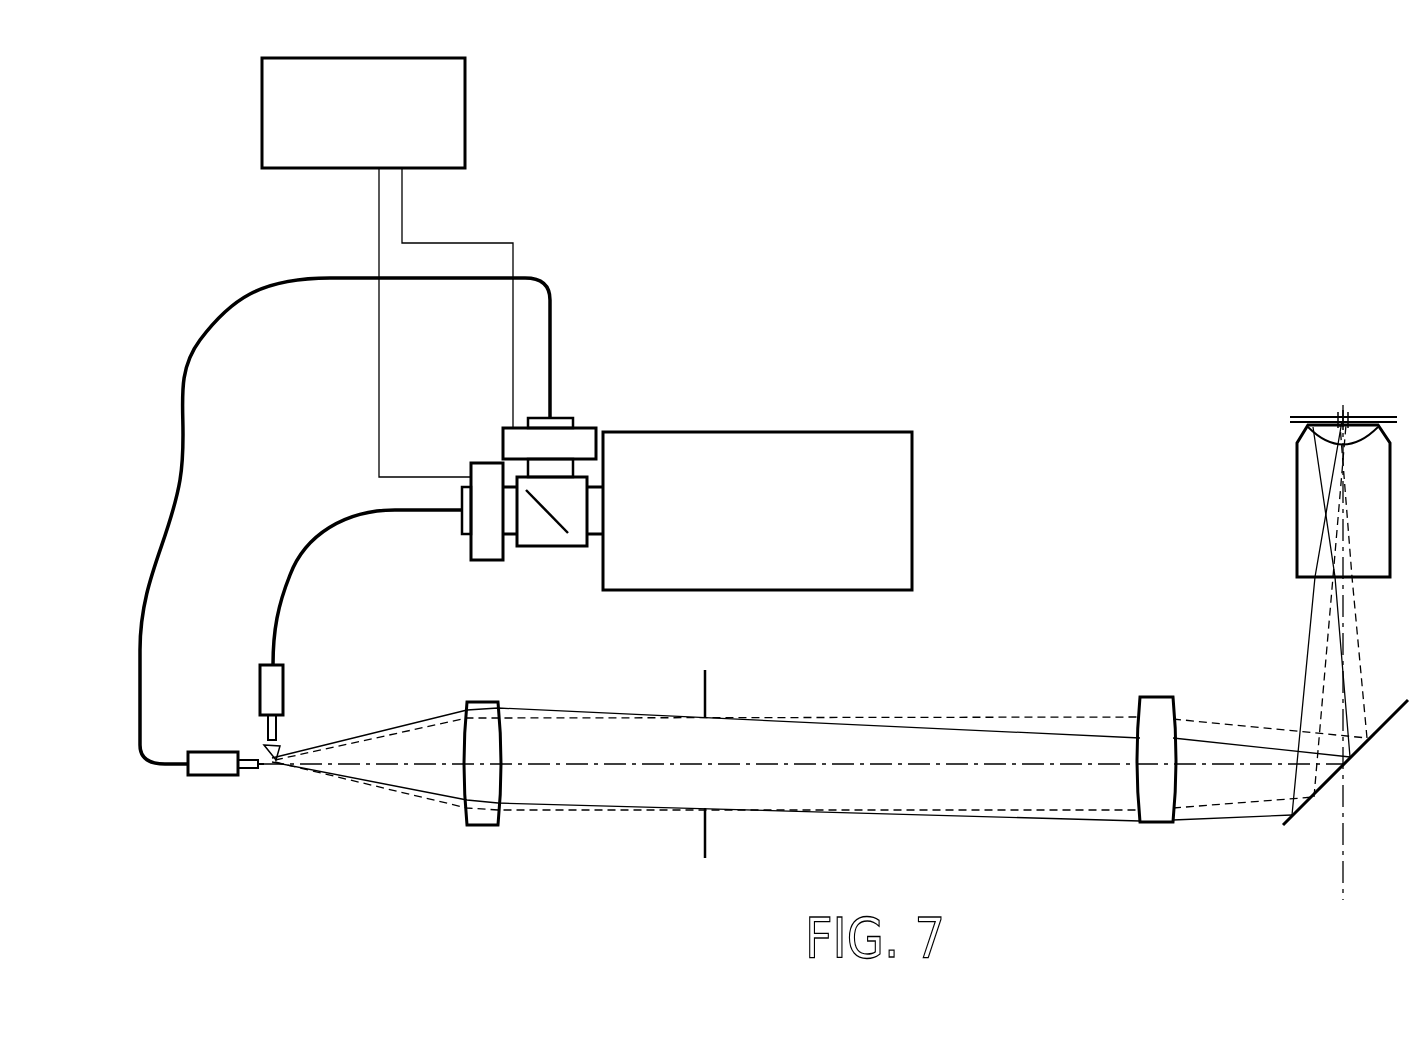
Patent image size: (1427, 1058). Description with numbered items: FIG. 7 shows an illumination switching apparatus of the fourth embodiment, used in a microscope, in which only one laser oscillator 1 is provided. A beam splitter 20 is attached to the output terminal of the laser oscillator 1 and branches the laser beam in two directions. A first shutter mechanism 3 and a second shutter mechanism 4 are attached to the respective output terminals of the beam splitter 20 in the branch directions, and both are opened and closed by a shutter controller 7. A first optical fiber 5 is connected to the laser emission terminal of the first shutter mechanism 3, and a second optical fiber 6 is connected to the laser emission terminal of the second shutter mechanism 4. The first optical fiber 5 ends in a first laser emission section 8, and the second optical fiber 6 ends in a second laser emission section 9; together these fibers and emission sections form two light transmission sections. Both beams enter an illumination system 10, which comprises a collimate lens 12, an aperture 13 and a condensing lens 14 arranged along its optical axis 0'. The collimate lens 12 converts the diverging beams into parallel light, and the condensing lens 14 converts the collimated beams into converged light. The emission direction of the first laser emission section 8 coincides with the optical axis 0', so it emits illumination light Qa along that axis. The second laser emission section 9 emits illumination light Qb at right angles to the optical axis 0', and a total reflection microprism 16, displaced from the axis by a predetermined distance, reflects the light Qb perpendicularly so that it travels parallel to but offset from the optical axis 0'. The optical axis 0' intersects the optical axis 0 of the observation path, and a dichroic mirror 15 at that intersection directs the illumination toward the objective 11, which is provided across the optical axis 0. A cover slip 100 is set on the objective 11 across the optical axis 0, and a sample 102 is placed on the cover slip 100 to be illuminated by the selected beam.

The laser oscillator 1 is at (762, 432).
The first shutter mechanism 3 is at (503, 443).
The second shutter mechanism 4 is at (484, 560).
The first optical fiber 5 is at (188, 437).
The second optical fiber 6 is at (303, 546).
The shutter controller 7 is at (467, 113).
The first laser emission section 8 is at (212, 776).
The second laser emission section 9 is at (289, 666).
The illumination system 10 is at (1006, 708).
The objective 11 is at (1297, 508).
The collimate lens 12 is at (480, 827).
The aperture 13 is at (703, 848).
The condensing lens 14 is at (1162, 823).
The dichroic mirror 15 is at (1390, 722).
The total reflection microprism 16 is at (276, 752).
The beam splitter 20 is at (556, 530).
The optical axis 0 is at (1372, 652).
The optical axis 0' is at (802, 711).
The illumination light Qa is at (336, 783).
The illumination light Qb is at (430, 718).
The cover slip 100 is at (1290, 420).
The sample 102 is at (1343, 417).